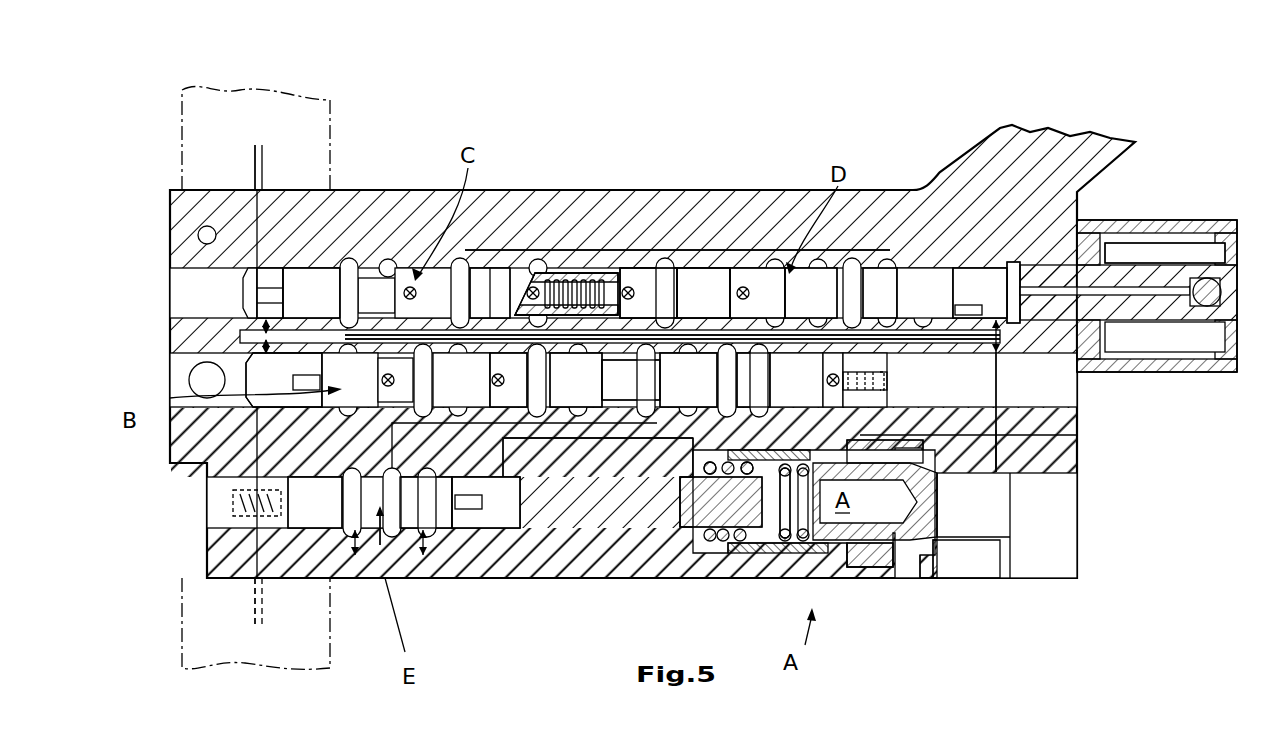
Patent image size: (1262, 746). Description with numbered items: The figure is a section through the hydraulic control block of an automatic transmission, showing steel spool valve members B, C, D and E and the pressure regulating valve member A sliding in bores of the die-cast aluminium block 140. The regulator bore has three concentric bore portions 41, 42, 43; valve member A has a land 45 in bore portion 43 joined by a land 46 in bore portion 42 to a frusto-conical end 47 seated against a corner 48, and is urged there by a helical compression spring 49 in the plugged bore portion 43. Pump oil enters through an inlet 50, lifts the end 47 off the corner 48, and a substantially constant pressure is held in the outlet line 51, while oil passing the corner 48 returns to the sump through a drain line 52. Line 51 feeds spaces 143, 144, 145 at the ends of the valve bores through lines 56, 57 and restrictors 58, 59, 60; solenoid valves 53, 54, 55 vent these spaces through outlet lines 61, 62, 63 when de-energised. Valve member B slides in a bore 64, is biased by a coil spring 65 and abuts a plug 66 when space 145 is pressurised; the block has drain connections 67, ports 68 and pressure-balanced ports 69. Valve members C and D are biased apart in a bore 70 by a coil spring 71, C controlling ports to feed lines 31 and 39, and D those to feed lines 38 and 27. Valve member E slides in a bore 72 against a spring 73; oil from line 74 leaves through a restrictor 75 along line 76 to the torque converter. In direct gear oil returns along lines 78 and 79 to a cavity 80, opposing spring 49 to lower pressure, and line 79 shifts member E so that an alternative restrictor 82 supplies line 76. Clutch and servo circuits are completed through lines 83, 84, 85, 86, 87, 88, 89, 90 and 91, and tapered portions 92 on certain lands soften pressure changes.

The feed line 27 is at (780, 268).
The feed line 31 is at (405, 265).
The feed line 38 is at (660, 250).
The feed line 39 is at (492, 268).
The bore portion 41 is at (993, 537).
The bore portion 42 is at (865, 568).
The bore portion 43 is at (720, 540).
The land 45 is at (760, 555).
The land 46 is at (907, 570).
The frusto-conical end 47 is at (937, 473).
The corner 48 is at (958, 560).
The helical compression spring 49 is at (786, 542).
The inlet 50 is at (1057, 526).
The outlet line 51 is at (996, 430).
The drain line 52 is at (920, 578).
The solenoid valve 53 is at (1155, 222).
The solenoid valve 54 is at (312, 163).
The solenoid valve 55 is at (227, 619).
The line 56 is at (990, 340).
The line 57 is at (928, 340).
The restrictor 58 is at (998, 328).
The restrictor 59 is at (266, 326).
The restrictor 60 is at (266, 346).
The outlet line 61 is at (1145, 296).
The outlet line 62 is at (256, 172).
The outlet line 63 is at (263, 598).
The bore 64 is at (302, 408).
The coil spring 65 is at (885, 382).
The plug 66 is at (965, 408).
The drain connection 67 is at (505, 381).
The port 68 is at (725, 268).
The pressure-balanced port 69 is at (420, 408).
The bore 70 is at (975, 268).
The coil spring 71 is at (628, 268).
The bore 72 is at (490, 528).
The spring 73 is at (240, 503).
The line 74 is at (996, 473).
The restrictor 75 is at (425, 557).
The line 76 is at (420, 556).
The line 78 is at (590, 477).
The line 79 is at (658, 477).
The cavity 80 is at (870, 568).
The restrictor 82 is at (355, 556).
The line 83 is at (672, 338).
The line 84 is at (788, 338).
The line 85 is at (758, 345).
The line 86 is at (682, 345).
The line 87 is at (578, 273).
The line 88 is at (648, 338).
The line 89 is at (603, 360).
The line 90 is at (650, 345).
The line 91 is at (862, 335).
The tapered portion 92 is at (466, 292).
The die-cast aluminium block 140 is at (885, 190).
The space 143 is at (1005, 297).
The space 144 is at (275, 273).
The space 145 is at (292, 386).